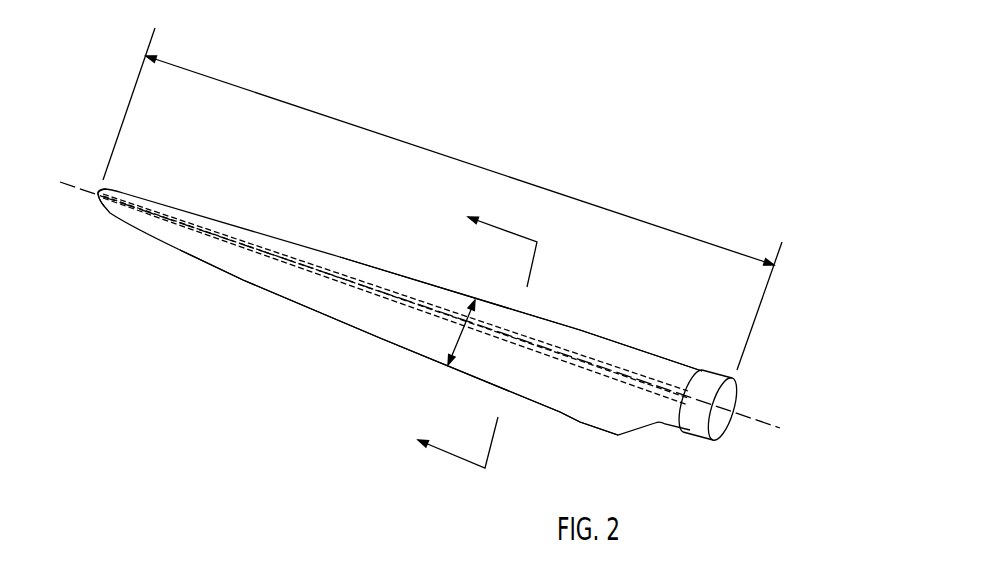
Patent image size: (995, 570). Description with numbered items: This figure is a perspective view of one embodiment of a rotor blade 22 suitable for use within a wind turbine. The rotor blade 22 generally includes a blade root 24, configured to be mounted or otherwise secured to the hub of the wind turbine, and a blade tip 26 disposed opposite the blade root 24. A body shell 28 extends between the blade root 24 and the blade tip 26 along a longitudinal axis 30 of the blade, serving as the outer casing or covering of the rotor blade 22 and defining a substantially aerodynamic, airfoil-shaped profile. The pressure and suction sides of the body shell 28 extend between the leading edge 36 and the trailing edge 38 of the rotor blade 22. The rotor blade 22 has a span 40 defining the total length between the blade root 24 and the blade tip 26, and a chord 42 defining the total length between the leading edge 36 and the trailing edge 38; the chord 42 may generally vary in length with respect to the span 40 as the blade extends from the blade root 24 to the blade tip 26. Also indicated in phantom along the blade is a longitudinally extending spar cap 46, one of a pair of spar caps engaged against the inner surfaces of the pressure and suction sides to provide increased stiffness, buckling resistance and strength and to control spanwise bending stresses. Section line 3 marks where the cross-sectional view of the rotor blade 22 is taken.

The rotor blade 22 is at (640, 138).
The blade root 24 is at (697, 420).
The blade tip 26 is at (97, 190).
The body shell 28 is at (265, 275).
The longitudinal axis 30 is at (95, 193).
The leading edge 36 is at (566, 325).
The trailing edge 38 is at (580, 424).
The span 40 is at (390, 134).
The chord 42 is at (458, 332).
The spar cap 46 is at (310, 280).
The section line 3- 3 is at (467, 333).